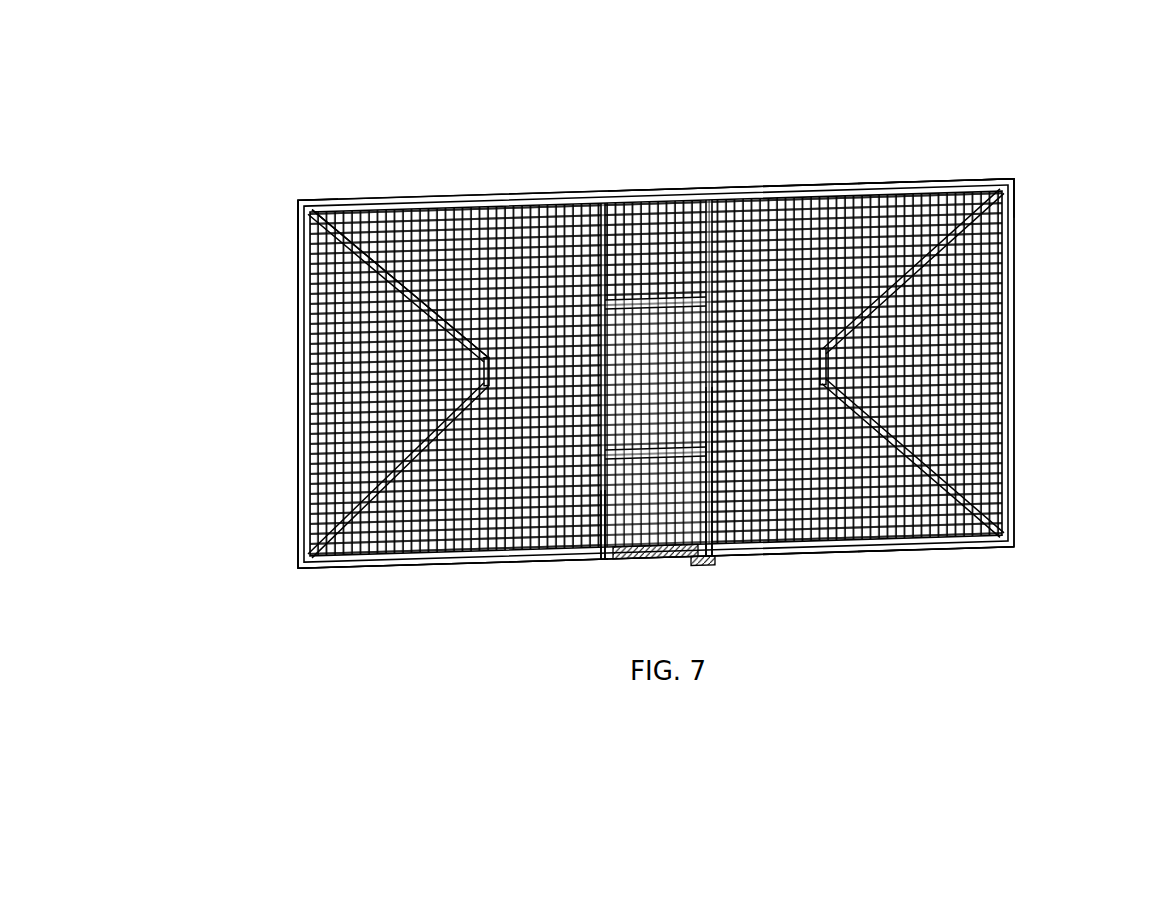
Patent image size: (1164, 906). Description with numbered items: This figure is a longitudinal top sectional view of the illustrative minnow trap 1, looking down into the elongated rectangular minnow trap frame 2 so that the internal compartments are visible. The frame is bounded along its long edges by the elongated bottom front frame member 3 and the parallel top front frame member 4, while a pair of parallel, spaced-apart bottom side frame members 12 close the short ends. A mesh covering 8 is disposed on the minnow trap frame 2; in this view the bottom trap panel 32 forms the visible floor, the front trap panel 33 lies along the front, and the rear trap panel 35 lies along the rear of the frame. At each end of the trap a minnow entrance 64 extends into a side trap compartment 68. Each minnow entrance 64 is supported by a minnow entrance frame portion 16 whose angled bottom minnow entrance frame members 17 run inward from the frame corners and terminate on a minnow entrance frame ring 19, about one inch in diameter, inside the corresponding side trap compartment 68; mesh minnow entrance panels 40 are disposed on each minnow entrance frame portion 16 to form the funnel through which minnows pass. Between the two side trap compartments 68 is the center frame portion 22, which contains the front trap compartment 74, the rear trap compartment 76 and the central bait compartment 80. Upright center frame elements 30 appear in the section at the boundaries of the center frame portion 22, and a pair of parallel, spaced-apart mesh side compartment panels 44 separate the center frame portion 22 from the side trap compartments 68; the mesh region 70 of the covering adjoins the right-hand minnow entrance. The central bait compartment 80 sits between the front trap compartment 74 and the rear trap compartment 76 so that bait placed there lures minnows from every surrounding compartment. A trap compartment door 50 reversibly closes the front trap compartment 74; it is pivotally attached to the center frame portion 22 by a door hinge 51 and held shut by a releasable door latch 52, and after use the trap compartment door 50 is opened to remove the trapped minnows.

The minnow trap 1 is at (257, 146).
The minnow trap frame 2 is at (405, 570).
The bottom front frame member 3 is at (830, 553).
The top front frame member 4 is at (756, 180).
The mesh covering 8 is at (290, 502).
The bottom side frame members 12 is at (285, 353).
The minnow entrance frame portion 16 is at (332, 215).
The bottom minnow entrance frame member 17 is at (290, 318).
The minnow entrance frame ring 19 is at (475, 368).
The center frame portion 22 is at (712, 472).
The vertical post 30 is at (593, 220).
The bottom trap panel 32 is at (437, 203).
The front trap panel 33 is at (915, 540).
The rear trap panel 35 is at (922, 183).
The mesh minnow entrance panel 40 is at (370, 282).
The mesh side compartment panel 44 is at (610, 220).
The trap compartment door 50 is at (660, 553).
The door hinge 51 is at (600, 548).
The releasable door latch 52 is at (697, 558).
The minnow entrance 64 is at (293, 240).
The side trap compartment 68 is at (523, 217).
The right mesh panel 70 is at (870, 297).
The front trap compartment 74 is at (660, 488).
The rear trap compartment 76 is at (633, 222).
The central bait compartment 80 is at (640, 385).